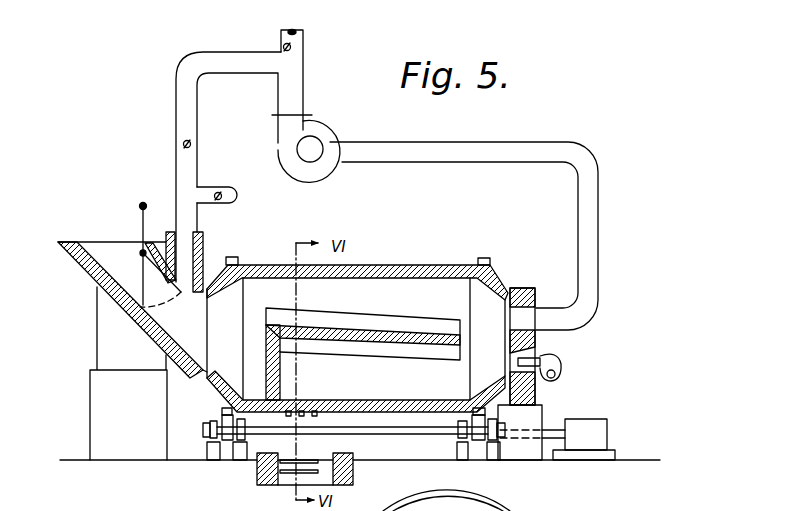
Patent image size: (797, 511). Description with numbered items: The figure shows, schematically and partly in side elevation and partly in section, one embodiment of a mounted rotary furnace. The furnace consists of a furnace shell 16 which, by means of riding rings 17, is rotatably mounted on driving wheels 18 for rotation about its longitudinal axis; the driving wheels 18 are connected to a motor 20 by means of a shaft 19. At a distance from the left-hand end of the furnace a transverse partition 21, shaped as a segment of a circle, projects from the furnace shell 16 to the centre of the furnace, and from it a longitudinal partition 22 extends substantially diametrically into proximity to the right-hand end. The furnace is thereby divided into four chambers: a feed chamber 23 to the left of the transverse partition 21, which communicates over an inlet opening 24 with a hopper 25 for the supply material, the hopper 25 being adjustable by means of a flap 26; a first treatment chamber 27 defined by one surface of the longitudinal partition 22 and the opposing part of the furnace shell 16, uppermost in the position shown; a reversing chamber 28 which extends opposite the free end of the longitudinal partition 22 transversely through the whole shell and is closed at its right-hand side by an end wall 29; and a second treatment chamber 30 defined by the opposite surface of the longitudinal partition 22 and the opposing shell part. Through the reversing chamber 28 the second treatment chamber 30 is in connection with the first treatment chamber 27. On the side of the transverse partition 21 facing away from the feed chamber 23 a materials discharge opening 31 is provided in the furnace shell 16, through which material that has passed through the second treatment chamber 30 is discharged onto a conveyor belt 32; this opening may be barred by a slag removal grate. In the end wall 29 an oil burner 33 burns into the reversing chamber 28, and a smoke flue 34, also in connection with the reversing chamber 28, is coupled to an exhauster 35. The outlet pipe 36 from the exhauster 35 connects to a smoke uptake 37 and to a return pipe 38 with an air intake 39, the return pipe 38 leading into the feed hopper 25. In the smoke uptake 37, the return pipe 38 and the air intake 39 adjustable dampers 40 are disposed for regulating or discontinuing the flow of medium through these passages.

The furnace shell 16 is at (355, 265).
The riding rings 17 is at (240, 257).
The driving wheels 18 is at (232, 441).
The shaft 19 is at (420, 430).
The motor 20 is at (607, 432).
The transverse partition 21 is at (272, 366).
The longitudinal partition 22 is at (418, 336).
The feed chamber 23 is at (233, 353).
The inlet opening 24 is at (205, 356).
The hopper 25 is at (84, 258).
The flap 26 is at (140, 292).
The first treatment chamber 27 is at (339, 303).
The reversing chamber 28 is at (497, 358).
The end wall 29 is at (538, 342).
The second treatment chamber 30 is at (390, 388).
The materials discharge opening 31 is at (318, 409).
The conveyor belt 32 is at (306, 459).
The oil burner 33 is at (562, 372).
The smoke flue 34 is at (588, 299).
The exhauster 35 is at (335, 138).
The outlet pipe 36 is at (292, 92).
The smoke uptake 37 is at (300, 31).
The return pipe 38 is at (179, 102).
The air intake 39 is at (222, 186).
The adjustable dampers 40 is at (303, 55).